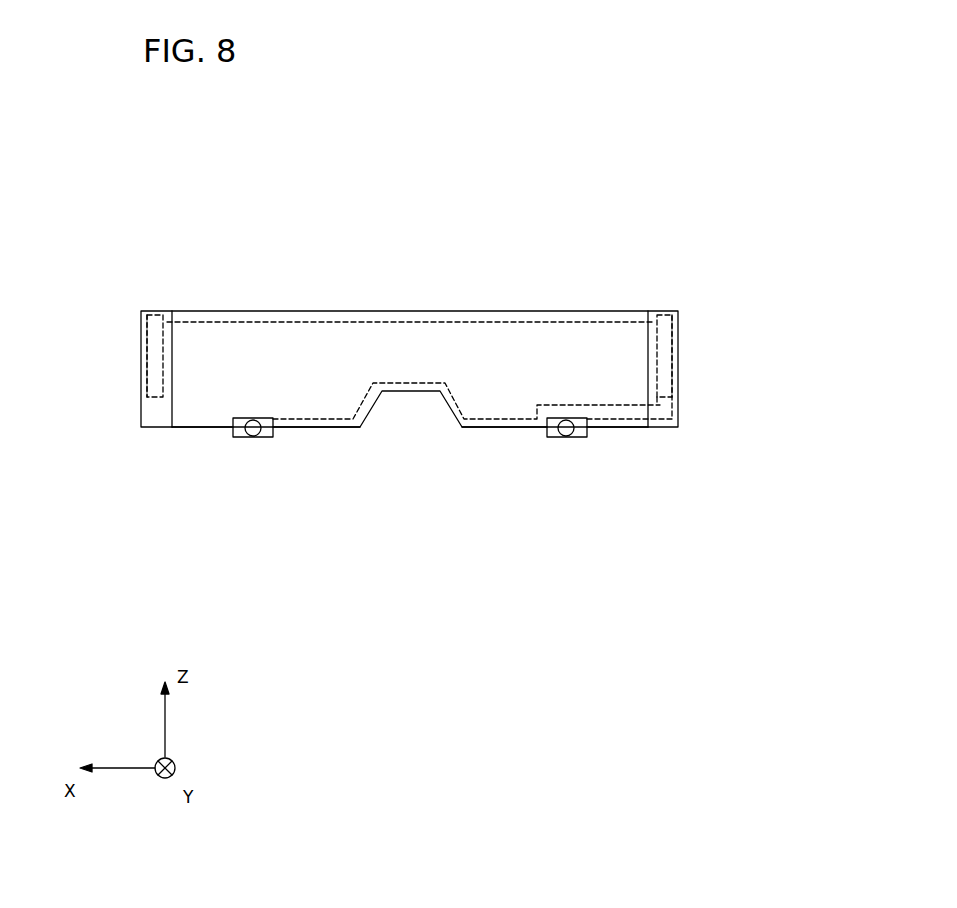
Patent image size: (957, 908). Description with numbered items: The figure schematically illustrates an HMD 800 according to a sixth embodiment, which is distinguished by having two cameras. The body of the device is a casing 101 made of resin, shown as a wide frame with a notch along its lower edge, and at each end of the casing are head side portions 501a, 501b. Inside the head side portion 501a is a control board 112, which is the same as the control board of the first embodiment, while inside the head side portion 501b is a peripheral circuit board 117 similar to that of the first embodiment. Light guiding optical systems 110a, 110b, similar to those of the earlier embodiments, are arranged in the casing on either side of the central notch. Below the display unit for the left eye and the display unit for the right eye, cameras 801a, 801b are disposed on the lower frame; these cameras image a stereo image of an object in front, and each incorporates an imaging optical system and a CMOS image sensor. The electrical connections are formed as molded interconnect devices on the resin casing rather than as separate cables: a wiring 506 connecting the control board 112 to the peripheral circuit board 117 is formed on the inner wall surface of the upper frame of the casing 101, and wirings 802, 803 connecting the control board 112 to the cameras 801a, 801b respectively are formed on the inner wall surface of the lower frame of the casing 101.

The HMD 800 is at (432, 206).
The casing 101 is at (562, 311).
The wiring 506 is at (340, 318).
The control board 112 is at (673, 338).
The head side portion 501a is at (680, 370).
The head side portion 501b is at (140, 331).
The peripheral circuit board 117 is at (138, 370).
The light guiding optical system 110a is at (483, 420).
The light guiding optical system 110b is at (217, 390).
The camera 801a is at (565, 437).
The camera 801b is at (263, 437).
The wiring 802 is at (598, 407).
The wiring 803 is at (320, 428).